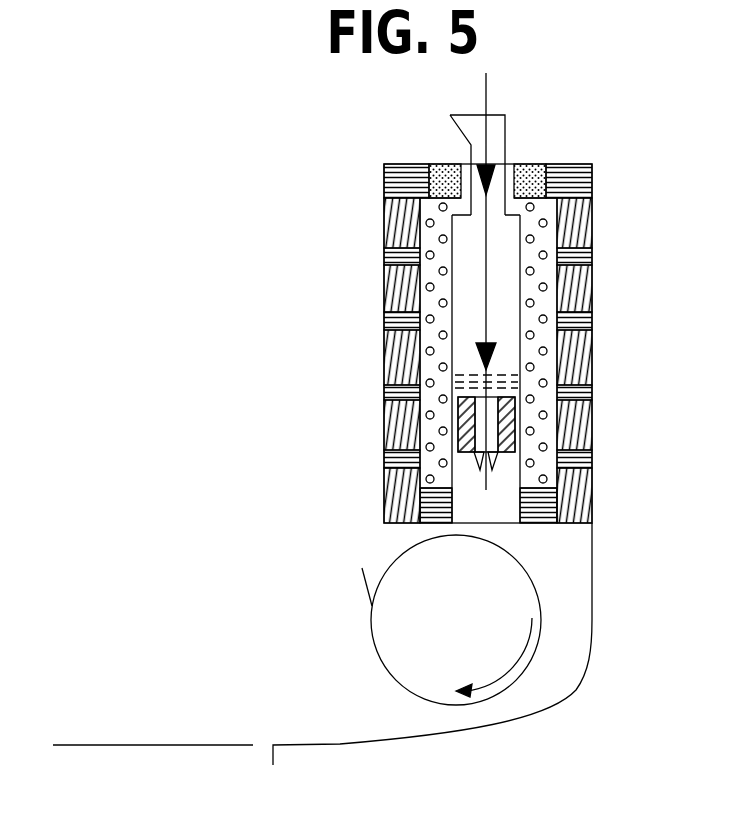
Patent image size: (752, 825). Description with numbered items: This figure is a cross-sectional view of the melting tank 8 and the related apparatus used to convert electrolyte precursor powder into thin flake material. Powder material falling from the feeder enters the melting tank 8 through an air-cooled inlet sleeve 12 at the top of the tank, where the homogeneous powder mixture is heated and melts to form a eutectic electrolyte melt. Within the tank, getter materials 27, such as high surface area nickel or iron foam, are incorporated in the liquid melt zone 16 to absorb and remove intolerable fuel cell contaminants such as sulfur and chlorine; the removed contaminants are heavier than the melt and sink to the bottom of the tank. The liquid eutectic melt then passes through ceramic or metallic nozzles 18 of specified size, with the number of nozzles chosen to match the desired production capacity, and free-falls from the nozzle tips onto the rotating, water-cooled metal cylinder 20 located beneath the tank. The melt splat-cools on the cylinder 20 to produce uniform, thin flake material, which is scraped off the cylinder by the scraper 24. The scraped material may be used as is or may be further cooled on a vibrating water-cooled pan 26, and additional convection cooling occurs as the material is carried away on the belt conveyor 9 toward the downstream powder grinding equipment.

The melting tank 8 is at (522, 330).
The air-cooled inlet sleeve 12 is at (428, 126).
The liquid melt zone 16 is at (520, 382).
The getter materials 27 is at (452, 412).
The nozzles 18 is at (500, 468).
The rotating water-cooled metal cylinder 20 is at (372, 650).
The scraper 24 is at (366, 582).
The vibrating water-cooled pan 26 is at (560, 697).
The belt conveyor 9 is at (153, 784).